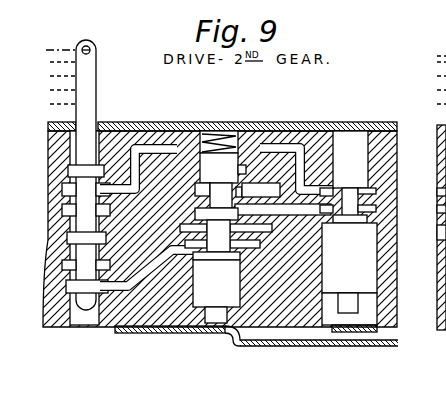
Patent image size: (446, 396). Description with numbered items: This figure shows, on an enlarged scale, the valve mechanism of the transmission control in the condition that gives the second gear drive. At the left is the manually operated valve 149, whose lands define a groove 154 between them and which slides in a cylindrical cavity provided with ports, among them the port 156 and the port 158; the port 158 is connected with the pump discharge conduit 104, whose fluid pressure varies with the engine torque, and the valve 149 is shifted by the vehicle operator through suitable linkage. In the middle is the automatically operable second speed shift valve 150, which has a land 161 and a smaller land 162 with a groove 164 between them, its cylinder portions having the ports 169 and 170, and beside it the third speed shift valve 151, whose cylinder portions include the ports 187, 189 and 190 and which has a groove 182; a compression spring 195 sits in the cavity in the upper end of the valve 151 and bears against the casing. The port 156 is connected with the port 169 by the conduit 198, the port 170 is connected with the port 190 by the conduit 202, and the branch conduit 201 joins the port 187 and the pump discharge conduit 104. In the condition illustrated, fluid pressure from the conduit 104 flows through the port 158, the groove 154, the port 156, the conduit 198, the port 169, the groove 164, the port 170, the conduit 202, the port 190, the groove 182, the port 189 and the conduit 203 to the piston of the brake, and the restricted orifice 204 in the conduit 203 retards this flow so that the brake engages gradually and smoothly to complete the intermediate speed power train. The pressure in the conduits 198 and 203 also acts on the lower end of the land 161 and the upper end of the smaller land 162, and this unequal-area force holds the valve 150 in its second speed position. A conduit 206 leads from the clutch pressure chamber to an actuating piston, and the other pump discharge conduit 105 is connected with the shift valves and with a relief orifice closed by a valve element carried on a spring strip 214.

The pump discharge conduit 104 is at (48, 247).
The pump discharge conduit 105 is at (390, 336).
The manually operated valve 149 is at (111, 124).
The second speed shift valve 150 is at (361, 124).
The third speed shift valve 151 is at (233, 126).
The groove 154 is at (82, 179).
The port 156 is at (65, 192).
The port 158 is at (75, 238).
The land 161 is at (363, 153).
The land 162 is at (349, 277).
The groove 164 is at (350, 192).
The port 169 is at (375, 192).
The port 170 is at (376, 208).
The groove 182 is at (223, 168).
The port 187 is at (250, 129).
The port 189 is at (195, 188).
The port 190 is at (196, 203).
The compression spring 195 is at (209, 129).
The conduit 198 is at (157, 129).
The branch conduit 201 is at (293, 129).
The conduit 202 is at (283, 210).
The conduit 203 is at (258, 190).
The restricted orifice 204 is at (222, 185).
The conduit 206 is at (175, 226).
The spring strip 214 is at (153, 333).